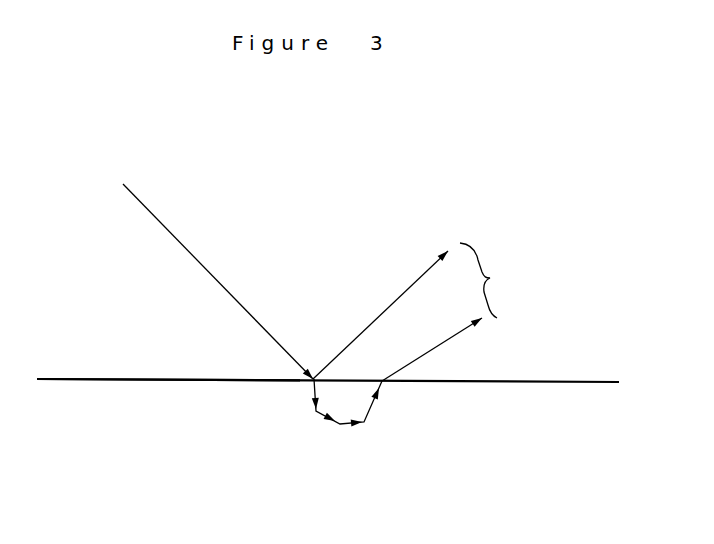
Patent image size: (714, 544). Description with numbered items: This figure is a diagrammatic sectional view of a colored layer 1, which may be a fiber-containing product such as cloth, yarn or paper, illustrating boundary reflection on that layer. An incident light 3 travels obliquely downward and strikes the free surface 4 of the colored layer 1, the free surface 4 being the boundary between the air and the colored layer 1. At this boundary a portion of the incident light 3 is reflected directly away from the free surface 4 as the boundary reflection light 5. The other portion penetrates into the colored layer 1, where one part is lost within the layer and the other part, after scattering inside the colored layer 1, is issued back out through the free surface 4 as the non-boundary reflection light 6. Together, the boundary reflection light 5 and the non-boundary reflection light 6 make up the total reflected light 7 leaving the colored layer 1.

The colored layer 1 is at (600, 400).
The incident light 3 is at (177, 238).
The free surface 4 is at (106, 378).
The boundary reflection light 5 is at (383, 310).
The non-boundary reflection light 6 is at (449, 338).
The reflected light 7 is at (483, 280).